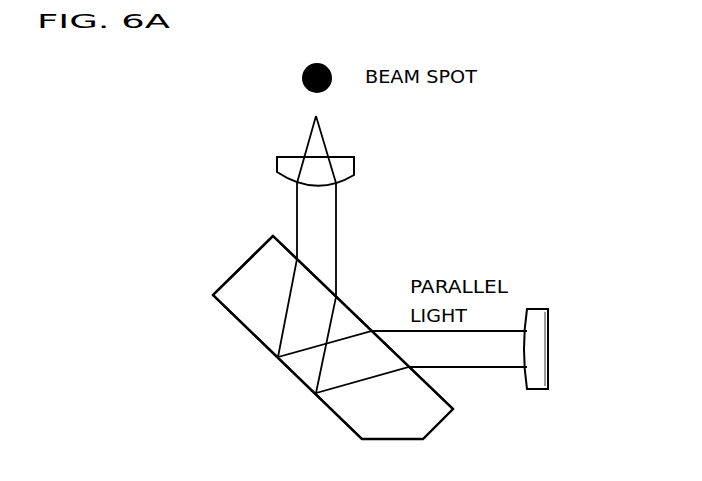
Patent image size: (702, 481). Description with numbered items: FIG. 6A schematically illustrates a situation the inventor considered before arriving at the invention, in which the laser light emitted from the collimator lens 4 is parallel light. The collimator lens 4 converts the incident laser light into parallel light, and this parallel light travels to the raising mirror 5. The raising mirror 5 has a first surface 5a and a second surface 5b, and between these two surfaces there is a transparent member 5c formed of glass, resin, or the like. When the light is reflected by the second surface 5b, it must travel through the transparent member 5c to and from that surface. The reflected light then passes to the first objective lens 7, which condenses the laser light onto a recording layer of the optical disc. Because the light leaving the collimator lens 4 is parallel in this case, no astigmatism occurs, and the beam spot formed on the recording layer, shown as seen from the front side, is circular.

The first objective lens 7 is at (278, 163).
The raising mirror 5 is at (158, 213).
The first surface 5a is at (270, 238).
The second surface 5b is at (250, 332).
The transparent member 5c is at (237, 292).
The collimator lens 4 is at (538, 309).